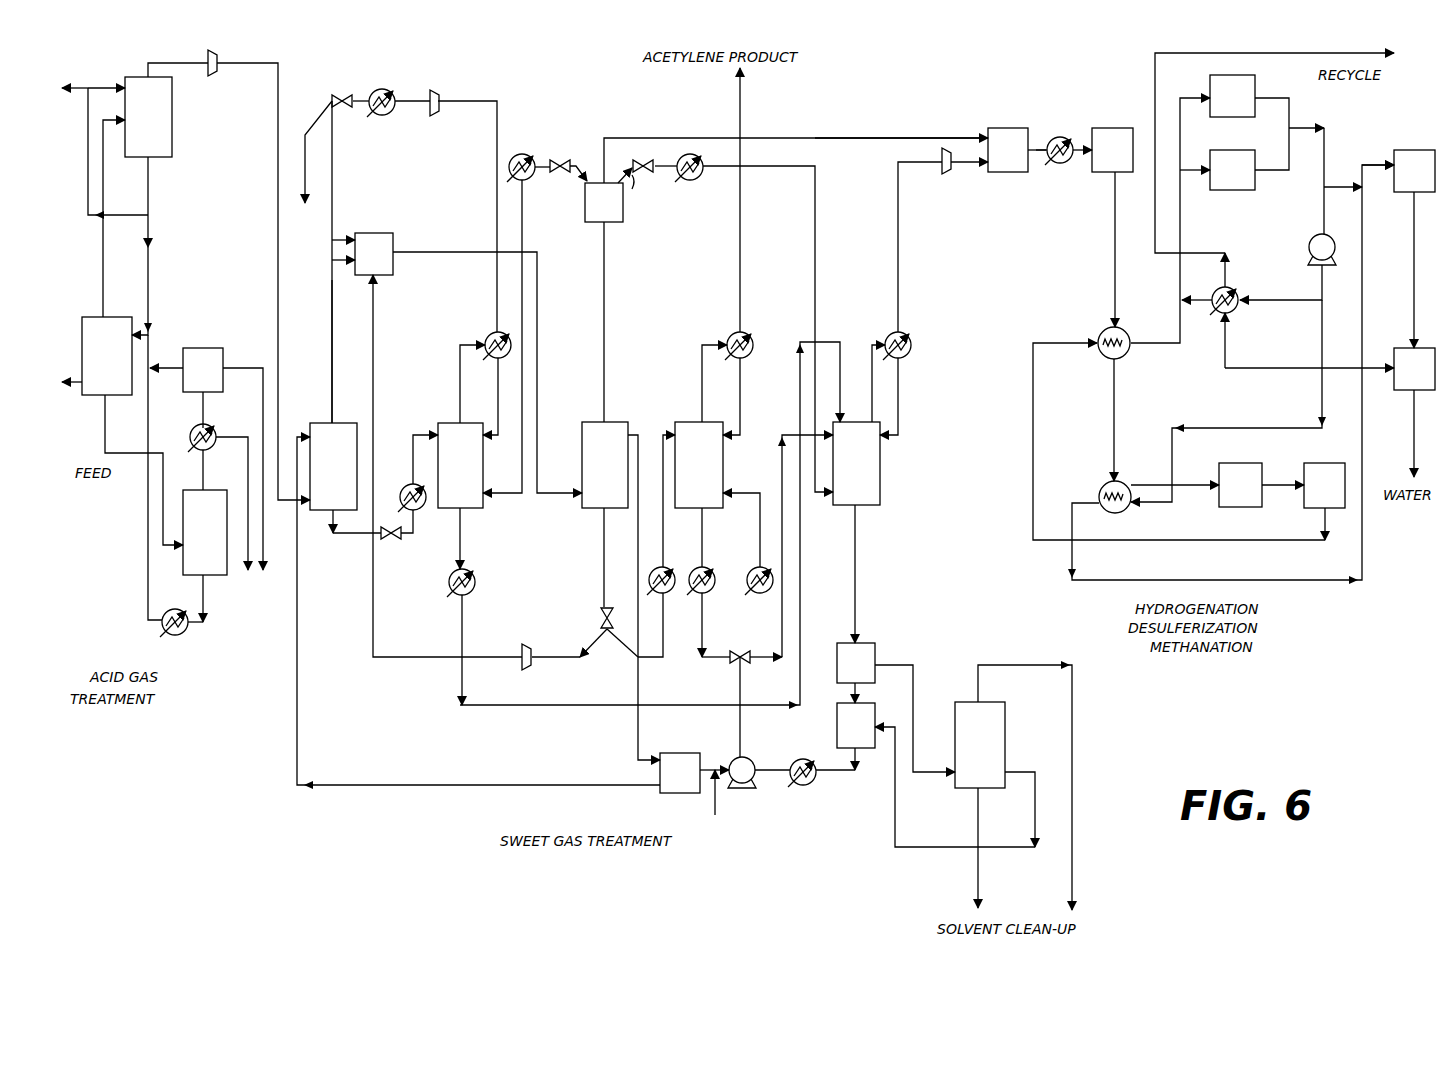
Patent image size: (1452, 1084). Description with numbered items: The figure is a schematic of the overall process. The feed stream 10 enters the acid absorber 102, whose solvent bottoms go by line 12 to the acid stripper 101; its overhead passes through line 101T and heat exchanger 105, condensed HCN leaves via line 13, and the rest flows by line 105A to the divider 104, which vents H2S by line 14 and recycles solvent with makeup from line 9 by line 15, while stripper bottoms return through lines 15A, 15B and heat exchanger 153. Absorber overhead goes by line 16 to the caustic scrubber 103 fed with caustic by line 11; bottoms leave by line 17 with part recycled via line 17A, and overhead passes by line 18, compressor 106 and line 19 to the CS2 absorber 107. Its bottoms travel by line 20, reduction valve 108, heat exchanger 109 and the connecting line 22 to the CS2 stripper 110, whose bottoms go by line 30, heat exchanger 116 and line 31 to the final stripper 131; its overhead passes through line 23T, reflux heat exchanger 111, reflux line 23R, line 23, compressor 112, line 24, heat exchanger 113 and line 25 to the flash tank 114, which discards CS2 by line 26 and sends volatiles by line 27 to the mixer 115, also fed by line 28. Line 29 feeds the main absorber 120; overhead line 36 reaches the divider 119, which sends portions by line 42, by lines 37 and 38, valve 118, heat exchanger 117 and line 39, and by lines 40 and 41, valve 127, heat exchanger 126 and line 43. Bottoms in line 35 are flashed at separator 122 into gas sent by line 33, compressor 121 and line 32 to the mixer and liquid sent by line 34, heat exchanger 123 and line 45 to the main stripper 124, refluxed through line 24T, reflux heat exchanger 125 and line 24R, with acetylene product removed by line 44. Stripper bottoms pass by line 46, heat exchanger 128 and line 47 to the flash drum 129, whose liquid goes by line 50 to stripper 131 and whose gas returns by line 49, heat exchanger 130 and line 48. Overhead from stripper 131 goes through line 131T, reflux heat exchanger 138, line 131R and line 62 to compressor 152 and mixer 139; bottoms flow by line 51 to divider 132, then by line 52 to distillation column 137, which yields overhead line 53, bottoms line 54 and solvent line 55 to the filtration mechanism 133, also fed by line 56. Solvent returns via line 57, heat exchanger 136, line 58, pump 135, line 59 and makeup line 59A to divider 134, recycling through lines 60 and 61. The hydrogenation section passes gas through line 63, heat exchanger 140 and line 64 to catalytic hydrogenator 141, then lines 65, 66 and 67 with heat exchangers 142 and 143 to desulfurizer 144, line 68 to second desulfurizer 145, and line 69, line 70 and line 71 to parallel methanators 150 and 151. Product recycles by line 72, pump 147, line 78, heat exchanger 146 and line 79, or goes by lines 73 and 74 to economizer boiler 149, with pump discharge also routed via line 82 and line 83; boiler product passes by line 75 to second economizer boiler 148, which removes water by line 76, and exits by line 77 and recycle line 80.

The makeup solvent line 9 is at (148, 306).
The feed stream 10 is at (66, 378).
The caustic line 11 is at (114, 86).
The bottoms line 12 is at (105, 419).
The HCN removal line 13 is at (236, 580).
The H2S removal line 14 is at (272, 562).
The solvent recycle line 15 is at (150, 344).
The stripper bottoms recycle line 15A is at (198, 590).
The stripper bottoms recycle line 15B is at (144, 558).
The absorber overhead line 16 is at (103, 174).
The scrubber bottoms line 17 is at (148, 190).
The scrubber bottoms recycle line 17A is at (88, 138).
The scrubber overhead line 18 is at (194, 68).
The compressed overhead line 19 is at (240, 68).
The CS2 absorber bottoms line 20 is at (350, 540).
The line 22 is at (420, 446).
The stripper overhead line 23 is at (494, 98).
The stripper overhead line 23T is at (454, 396).
The reflux line 23R is at (490, 400).
The compressed overhead line 24 is at (410, 106).
The main stripper overhead line 24T is at (688, 372).
The reflux line 24R is at (748, 364).
The cooled stream line 25 is at (356, 112).
The CS2 removal line 26 is at (305, 134).
The volatile constituents line 27 is at (336, 188).
The CS2 absorber overhead line 28 is at (330, 374).
The combined stream line 29 is at (462, 250).
The stripper bottoms line 30 is at (478, 536).
The bottoms transfer line 31 is at (460, 692).
The compressed gas return line 32 is at (494, 654).
The flash gas line 33 is at (562, 654).
The flash liquid line 34 is at (609, 650).
The main absorber bottoms line 35 is at (600, 534).
The main absorber overhead line 36 is at (541, 398).
The overhead recycle line 37 is at (596, 146).
The overhead recycle line 38 is at (526, 188).
The recycle feed line 39 is at (516, 504).
The overhead transfer line 40 is at (632, 161).
The overhead transfer line 41 is at (665, 152).
The hydrogenation feed line 42 is at (896, 134).
The final stripper feed line 43 is at (804, 222).
The acetylene product line 44 is at (744, 116).
The main stripper feed line 45 is at (658, 432).
The main stripper bottoms line 46 is at (708, 514).
The heated bottoms line 47 is at (697, 638).
The cooled gas return line 48 is at (768, 494).
The flash drum gas line 49 is at (744, 642).
The flash drum liquid line 50 is at (776, 460).
The final stripper bottoms line 51 is at (862, 570).
The distillation feed line 52 is at (916, 680).
The column overhead line 53 is at (1074, 794).
The column bottoms line 54 is at (980, 876).
The solvent stream line 55 is at (910, 848).
The bottoms line to filtration 56 is at (842, 706).
The filtered solvent line 57 is at (856, 772).
The heated solvent line 58 is at (768, 768).
The pumped solvent line 59 is at (712, 768).
The makeup solvent line 59A is at (714, 806).
The solvent recycle line 60 is at (638, 736).
The solvent recycle line 61 is at (496, 784).
The stripper overhead line 62 is at (892, 200).
The mixer outlet line 63 is at (1036, 160).
The hydrogenator feed line 64 is at (1076, 162).
The hydrogenated stream line 65 is at (1106, 262).
The hydrogenated stream line 66 is at (1106, 410).
The hydrogenated stream line 67 is at (1200, 480).
The desulfurizer transfer line 68 is at (1278, 480).
The desulfurized material line 69 is at (1032, 454).
The methanator feed line 70 is at (1158, 342).
The methanator feed line 71 is at (1180, 132).
The methanator product line 72 is at (1328, 142).
The methanator product line 73 is at (1340, 180).
The methanator product line 74 is at (1384, 150).
The boiler transfer line 75 is at (1414, 286).
The water removal line 76 is at (1412, 444).
The boiler outlet line 77 is at (1288, 366).
The pump discharge line 78 is at (1306, 300).
The recycle line 79 is at (1198, 316).
The recycle line 80 is at (1156, 106).
The non-recycled product line 82 is at (1252, 424).
The boiler feed line 83 is at (1212, 578).
The acid stripper 101 is at (205, 532).
The stripper overhead line 101T is at (205, 457).
The acid absorber 102 is at (107, 356).
The caustic scrubber 103 is at (148, 117).
The divider 104 is at (206, 348).
The heat exchanger 105 is at (191, 428).
The cooled overhead line 105A is at (226, 411).
The compressor 106 is at (214, 80).
The CS2 absorber 107 is at (333, 466).
The reduction valve 108 is at (394, 540).
The heat exchanger 109 is at (406, 484).
The CS2 stripper 110 is at (460, 465).
The reflux heat exchanger 111 is at (490, 330).
The compressor 112 is at (434, 116).
The heat exchanger 113 is at (386, 84).
The flash tank 114 is at (342, 95).
The mixer 115 is at (376, 232).
The heat exchanger 116 is at (476, 576).
The heat exchanger 117 is at (526, 150).
The valve 118 is at (564, 156).
The divider 119 is at (590, 228).
The main absorber 120 is at (605, 465).
The compressor 121 is at (520, 668).
The flash separator 122 is at (604, 606).
The heat exchanger 123 is at (668, 564).
The main stripper 124 is at (699, 465).
The reflux heat exchanger 125 is at (732, 330).
The heat exchanger 126 is at (688, 182).
The valve 127 is at (641, 186).
The heat exchanger 128 is at (718, 564).
The flash drum 129 is at (748, 666).
The heat exchanger 130 is at (754, 590).
The final stripper 131 is at (856, 463).
The final stripper overhead line 131T is at (870, 344).
The reflux line 131R is at (902, 370).
The divider 132 is at (876, 644).
The filtration mechanism 133 is at (876, 708).
The divider 134 is at (690, 752).
The pump 135 is at (740, 790).
The heat exchanger 136 is at (808, 790).
The distillation column 137 is at (980, 745).
The reflux heat exchanger 138 is at (890, 330).
The mixer 139 is at (1018, 126).
The heat exchanger 140 is at (1062, 130).
The catalytic hydrogenator 141 is at (1124, 124).
The heat exchanger 142 is at (1096, 334).
The heat exchanger 143 is at (1096, 480).
The desulfurizer 144 is at (1240, 485).
The second desulfurizer 145 is at (1324, 485).
The heat exchanger 146 is at (1240, 288).
The pump 147 is at (1310, 240).
The second economizer boiler 148 is at (1414, 369).
The economizer boiler 149 is at (1414, 171).
The methanator 150 is at (1232, 96).
The methanator 151 is at (1232, 170).
The compressor 152 is at (946, 172).
The heat exchanger 153 is at (187, 632).